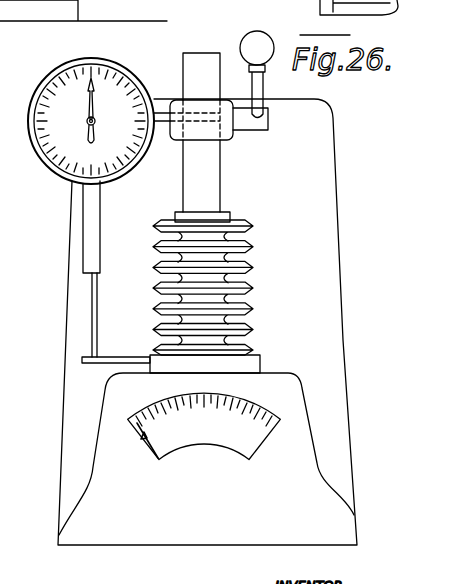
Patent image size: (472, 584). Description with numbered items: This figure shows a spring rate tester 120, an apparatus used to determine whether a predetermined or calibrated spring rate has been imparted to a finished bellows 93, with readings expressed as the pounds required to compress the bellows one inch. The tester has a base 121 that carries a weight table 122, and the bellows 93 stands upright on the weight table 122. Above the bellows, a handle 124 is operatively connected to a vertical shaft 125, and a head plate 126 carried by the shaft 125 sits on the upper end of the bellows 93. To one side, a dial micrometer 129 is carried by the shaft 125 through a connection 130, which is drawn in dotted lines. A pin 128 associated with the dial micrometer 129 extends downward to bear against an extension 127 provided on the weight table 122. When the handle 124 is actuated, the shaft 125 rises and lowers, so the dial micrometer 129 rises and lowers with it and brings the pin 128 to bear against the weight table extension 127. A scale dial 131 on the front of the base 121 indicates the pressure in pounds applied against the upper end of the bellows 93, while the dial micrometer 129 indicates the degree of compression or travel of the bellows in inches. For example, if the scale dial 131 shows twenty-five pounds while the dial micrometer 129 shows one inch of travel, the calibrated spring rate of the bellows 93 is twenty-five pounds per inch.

The bellows 93 is at (250, 270).
The spring rate tester 120 is at (320, 180).
The base 121 is at (183, 528).
The weight table 122 is at (262, 362).
The handle 124 is at (250, 42).
The shaft 125 is at (210, 178).
The head plate 126 is at (230, 215).
The extension 127 is at (125, 345).
The pin 128 is at (93, 318).
The dial micrometer 129 is at (50, 77).
The connection 130 is at (172, 100).
The scale dial 131 is at (195, 430).